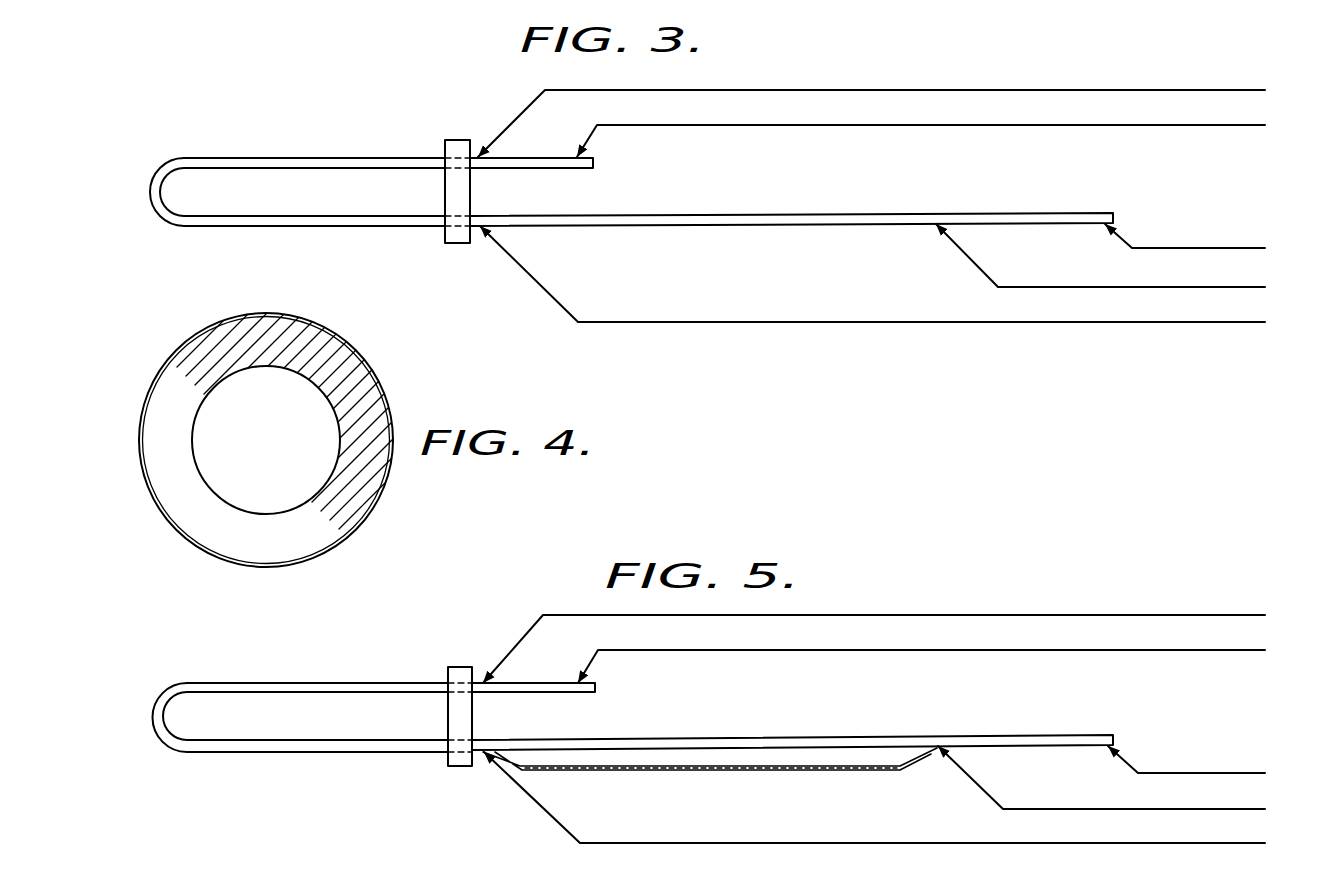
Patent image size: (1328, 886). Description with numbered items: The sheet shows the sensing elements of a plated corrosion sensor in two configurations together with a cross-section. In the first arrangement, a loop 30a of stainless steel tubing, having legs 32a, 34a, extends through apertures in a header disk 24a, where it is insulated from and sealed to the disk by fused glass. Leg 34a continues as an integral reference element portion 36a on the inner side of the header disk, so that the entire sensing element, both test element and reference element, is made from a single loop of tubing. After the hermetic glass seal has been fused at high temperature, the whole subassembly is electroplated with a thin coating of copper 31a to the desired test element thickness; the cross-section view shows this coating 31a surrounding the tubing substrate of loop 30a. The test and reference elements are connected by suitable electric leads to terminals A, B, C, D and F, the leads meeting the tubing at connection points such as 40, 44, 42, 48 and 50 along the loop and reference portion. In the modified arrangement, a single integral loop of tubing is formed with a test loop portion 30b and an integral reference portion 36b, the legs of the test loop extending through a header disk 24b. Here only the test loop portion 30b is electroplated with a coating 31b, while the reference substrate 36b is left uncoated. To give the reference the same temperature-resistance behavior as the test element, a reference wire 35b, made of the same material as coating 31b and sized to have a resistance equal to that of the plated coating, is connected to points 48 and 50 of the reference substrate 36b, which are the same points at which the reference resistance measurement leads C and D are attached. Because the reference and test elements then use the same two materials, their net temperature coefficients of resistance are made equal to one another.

In FIG. 3, the loop 30a is at (297, 163).
In FIG. 4, the loop 30a is at (328, 372).
In FIG. 3, the coating of copper 31a is at (233, 157).
In FIG. 4, the coating of copper 31a is at (386, 400).
In FIG. 3, the leg 32a is at (306, 160).
In FIG. 4, the leg 32a is at (348, 360).
In FIG. 3, the leg 34a is at (371, 228).
In FIG. 3, the reference element portion 36a is at (846, 213).
In FIG. 3, the header disk 24a is at (458, 140).
In FIG. 3, the upper strip end 40 is at (576, 157).
In FIG. 5, the upper strip end 40 is at (577, 683).
In FIG. 3, the lower strip end 42 is at (1104, 226).
In FIG. 5, the lower strip end 42 is at (1106, 748).
In FIG. 3, the upper junction at block 44 is at (480, 156).
In FIG. 5, the upper junction at block 44 is at (484, 680).
In FIG. 3, the point 48 is at (479, 230).
In FIG. 5, the point 48 is at (484, 756).
In FIG. 3, the point 50 is at (934, 227).
In FIG. 5, the point 50 is at (936, 750).
In FIG. 5, the test loop portion 30b is at (301, 688).
In FIG. 5, the coating 31b is at (265, 683).
In FIG. 5, the header disk 24b is at (459, 667).
In FIG. 5, the reference wire 35b is at (745, 772).
In FIG. 5, the reference portion 36b is at (732, 738).
In FIG. 3, the terminal A is at (931, 135).
In FIG. 5, the terminal A is at (931, 660).
In FIG. 3, the terminal B is at (881, 117).
In FIG. 5, the terminal B is at (884, 643).
In FIG. 3, the reference resistance measurement lead C is at (883, 280).
In FIG. 5, the reference resistance measurement lead C is at (885, 804).
In FIG. 3, the reference resistance measurement lead D is at (1111, 262).
In FIG. 5, the reference resistance measurement lead D is at (1112, 784).
In FIG. 3, the terminal F is at (1194, 242).
In FIG. 5, the terminal F is at (1195, 766).